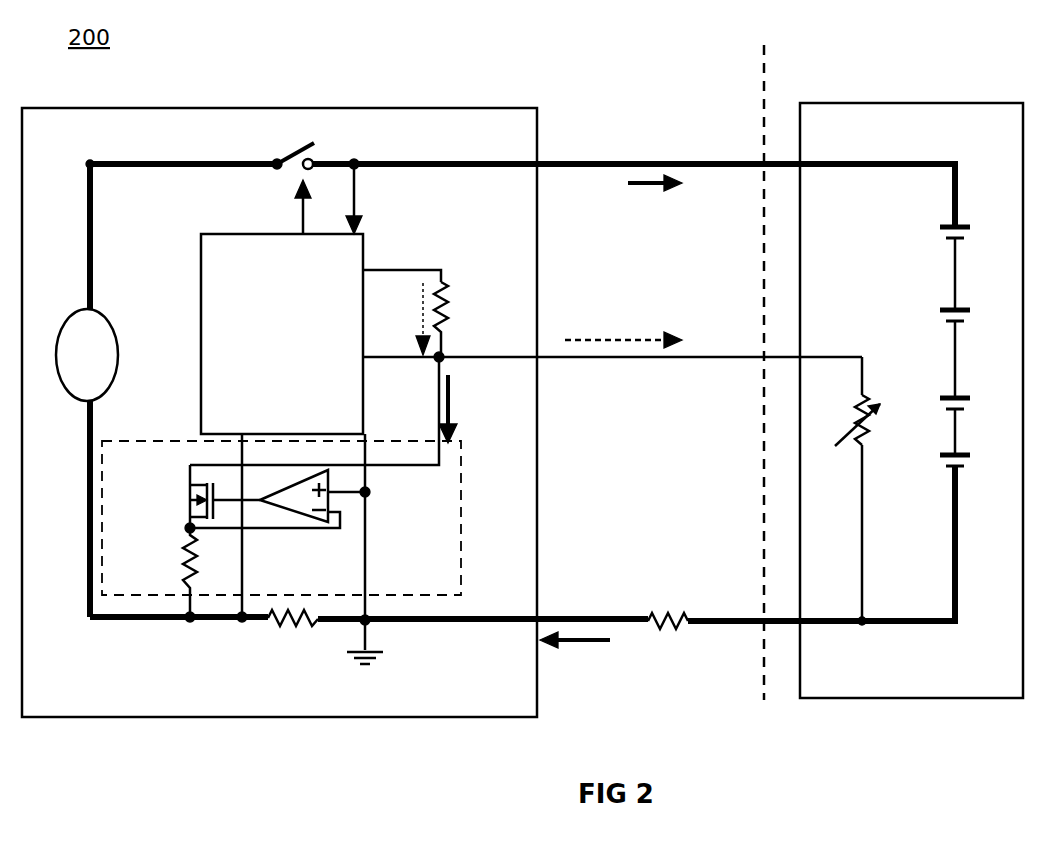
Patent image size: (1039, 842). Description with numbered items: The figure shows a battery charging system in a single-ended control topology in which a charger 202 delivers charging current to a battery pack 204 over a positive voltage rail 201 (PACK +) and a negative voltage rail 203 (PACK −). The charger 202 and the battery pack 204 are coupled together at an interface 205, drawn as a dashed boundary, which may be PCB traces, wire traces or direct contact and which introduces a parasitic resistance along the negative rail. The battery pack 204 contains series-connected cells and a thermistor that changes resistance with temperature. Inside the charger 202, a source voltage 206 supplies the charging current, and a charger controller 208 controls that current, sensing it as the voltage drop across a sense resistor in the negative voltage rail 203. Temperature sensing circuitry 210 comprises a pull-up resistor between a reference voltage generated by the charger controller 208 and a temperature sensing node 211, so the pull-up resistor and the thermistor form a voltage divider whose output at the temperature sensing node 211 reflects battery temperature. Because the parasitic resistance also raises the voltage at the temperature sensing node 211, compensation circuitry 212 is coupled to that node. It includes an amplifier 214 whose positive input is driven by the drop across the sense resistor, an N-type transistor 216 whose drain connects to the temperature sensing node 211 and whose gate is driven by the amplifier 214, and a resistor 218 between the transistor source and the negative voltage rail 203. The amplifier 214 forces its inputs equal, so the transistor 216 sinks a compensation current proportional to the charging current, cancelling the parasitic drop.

The voltage rail (PACK +) 201 is at (683, 163).
The charger 202 is at (245, 108).
The voltage rail (PACK −) 203 is at (700, 621).
The battery pack 204 is at (905, 103).
The interface 205 is at (764, 98).
The source voltage 206 is at (112, 337).
The charger controller 208 is at (275, 234).
The temperature sensing circuitry 210 is at (468, 238).
The temperature sensing node 211 is at (445, 355).
The compensation circuitry 212 is at (461, 508).
The amplifier 214 is at (305, 515).
The N-type transistor 216 is at (166, 482).
The resistor R_B 218 is at (166, 553).